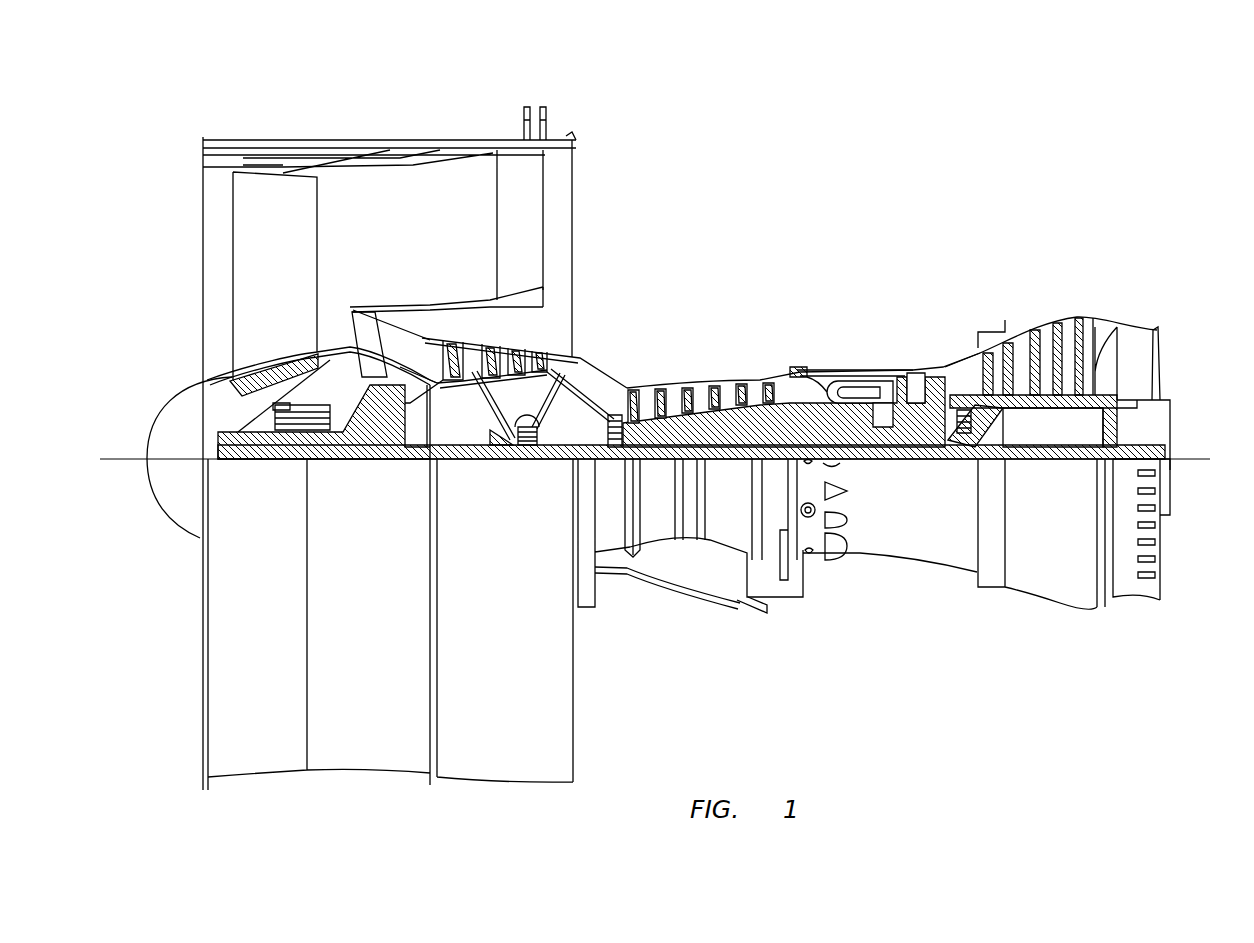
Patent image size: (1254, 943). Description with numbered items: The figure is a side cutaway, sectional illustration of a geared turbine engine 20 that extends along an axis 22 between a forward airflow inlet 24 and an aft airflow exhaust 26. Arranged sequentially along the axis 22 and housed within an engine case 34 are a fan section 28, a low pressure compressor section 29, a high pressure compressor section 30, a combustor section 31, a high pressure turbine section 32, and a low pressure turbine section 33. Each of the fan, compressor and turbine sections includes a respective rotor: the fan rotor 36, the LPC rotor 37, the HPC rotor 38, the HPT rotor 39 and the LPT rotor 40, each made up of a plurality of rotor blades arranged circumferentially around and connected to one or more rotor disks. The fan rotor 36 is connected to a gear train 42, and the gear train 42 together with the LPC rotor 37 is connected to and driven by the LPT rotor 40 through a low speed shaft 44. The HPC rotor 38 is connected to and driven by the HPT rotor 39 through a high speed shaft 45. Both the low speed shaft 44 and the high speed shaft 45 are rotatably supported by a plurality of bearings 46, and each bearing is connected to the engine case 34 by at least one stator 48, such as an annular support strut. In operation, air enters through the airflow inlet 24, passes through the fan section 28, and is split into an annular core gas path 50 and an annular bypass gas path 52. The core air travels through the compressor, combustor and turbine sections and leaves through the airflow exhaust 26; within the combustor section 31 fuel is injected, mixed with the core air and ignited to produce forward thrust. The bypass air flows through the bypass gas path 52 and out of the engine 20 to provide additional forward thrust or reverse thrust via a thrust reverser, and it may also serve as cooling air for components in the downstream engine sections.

The geared turbine engine 20 is at (160, 113).
The axis 22 is at (1201, 457).
The forward airflow inlet 24 is at (203, 195).
The aft airflow exhaust 26 is at (1163, 357).
The fan section 28 is at (287, 170).
The low pressure compressor section 29 is at (549, 341).
The high pressure compressor section 30 is at (701, 372).
The combustor section 31 is at (855, 367).
The high pressure turbine section 32 is at (917, 354).
The low pressure turbine section 33 is at (1080, 311).
The engine case 34 is at (917, 558).
The fan rotor 36 is at (207, 380).
The LPC rotor 37 is at (584, 359).
The HPC rotor 38 is at (780, 382).
The HPT rotor 39 is at (902, 370).
The LPT rotor 40 is at (1117, 331).
The gear train 42 is at (384, 313).
The low speed shaft 44 is at (1027, 460).
The high speed shaft 45 is at (870, 460).
The bearings 46 is at (285, 445).
The stator 48 is at (317, 357).
The annular core gas path 50 is at (612, 393).
The annular bypass gas path 52 is at (429, 225).